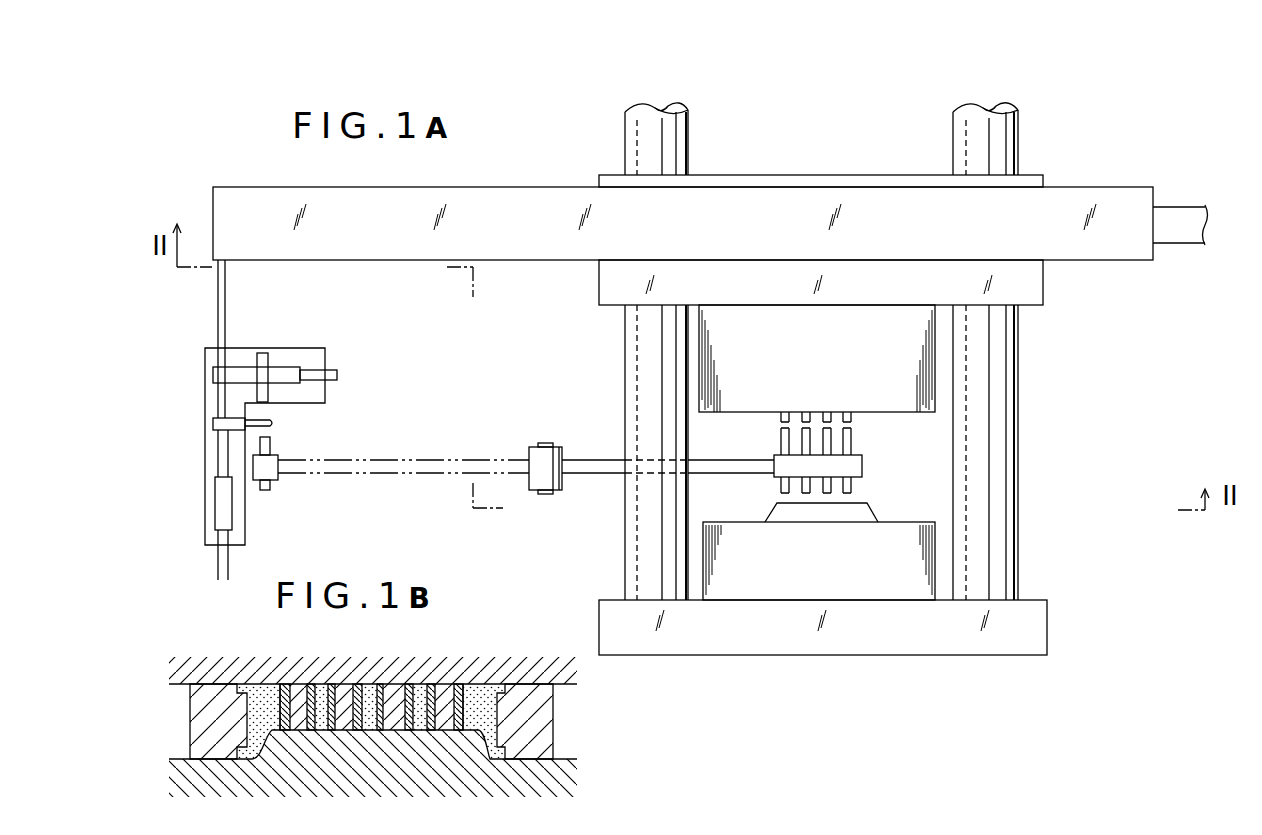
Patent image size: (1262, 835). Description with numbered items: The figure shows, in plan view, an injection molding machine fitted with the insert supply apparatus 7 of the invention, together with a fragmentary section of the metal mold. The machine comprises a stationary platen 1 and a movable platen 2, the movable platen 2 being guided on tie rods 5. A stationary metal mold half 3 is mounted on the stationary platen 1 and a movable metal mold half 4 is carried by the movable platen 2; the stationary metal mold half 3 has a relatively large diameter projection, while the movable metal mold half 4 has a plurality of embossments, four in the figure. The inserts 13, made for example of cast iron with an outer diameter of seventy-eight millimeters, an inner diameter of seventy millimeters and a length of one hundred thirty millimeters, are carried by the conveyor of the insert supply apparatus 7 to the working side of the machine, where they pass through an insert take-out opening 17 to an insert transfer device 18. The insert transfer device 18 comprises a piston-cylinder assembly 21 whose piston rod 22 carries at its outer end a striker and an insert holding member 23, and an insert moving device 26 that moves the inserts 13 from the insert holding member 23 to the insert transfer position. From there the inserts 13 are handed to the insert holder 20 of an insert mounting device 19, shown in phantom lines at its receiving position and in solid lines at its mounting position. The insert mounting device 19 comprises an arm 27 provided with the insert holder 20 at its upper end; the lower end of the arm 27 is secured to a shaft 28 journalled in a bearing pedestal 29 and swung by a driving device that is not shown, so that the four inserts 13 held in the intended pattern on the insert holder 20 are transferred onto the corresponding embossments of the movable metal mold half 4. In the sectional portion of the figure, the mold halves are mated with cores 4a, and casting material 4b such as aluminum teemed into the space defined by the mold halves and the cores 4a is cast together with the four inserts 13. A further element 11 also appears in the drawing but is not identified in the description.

In FIG. 1A, the stationary platen 1 is at (1047, 628).
In FIG. 1A, the movable platen 2 is at (1043, 287).
In FIG. 1A, the stationary metal mold half 3 is at (935, 560).
In FIG. 1B, the stationary metal mold half 3 is at (183, 762).
In FIG. 1A, the movable metal mold half 4 is at (935, 365).
In FIG. 1B, the movable metal mold half 4 is at (186, 683).
In FIG. 1B, the cores 4a is at (200, 722).
In FIG. 1B, the casting material 4b is at (478, 745).
In FIG. 1A, the tie rods 5 is at (625, 558).
In FIG. 1A, the insert supply apparatus 7 is at (381, 262).
In FIG. 1A, the drive shaft 11 is at (1208, 226).
In FIG. 1A, the inserts 13 is at (816, 452).
In FIG. 1B, the inserts 13 is at (450, 688).
In FIG. 1A, the insert take-out opening 17 is at (228, 262).
In FIG. 1A, the insert transfer device 18 is at (205, 400).
In FIG. 1A, the insert mounting device 19 is at (411, 476).
In FIG. 1A, the insert holder 20 is at (862, 466).
In FIG. 1A, the piston-cylinder assembly 21 is at (215, 562).
In FIG. 1A, the piston rod 22 is at (216, 303).
In FIG. 1A, the insert holding member 23 is at (213, 424).
In FIG. 1A, the insert moving device 26 is at (290, 365).
In FIG. 1A, the arm 27 is at (370, 459).
In FIG. 1A, the shaft 28 is at (546, 495).
In FIG. 1A, the bearing pedestal 29 is at (565, 453).